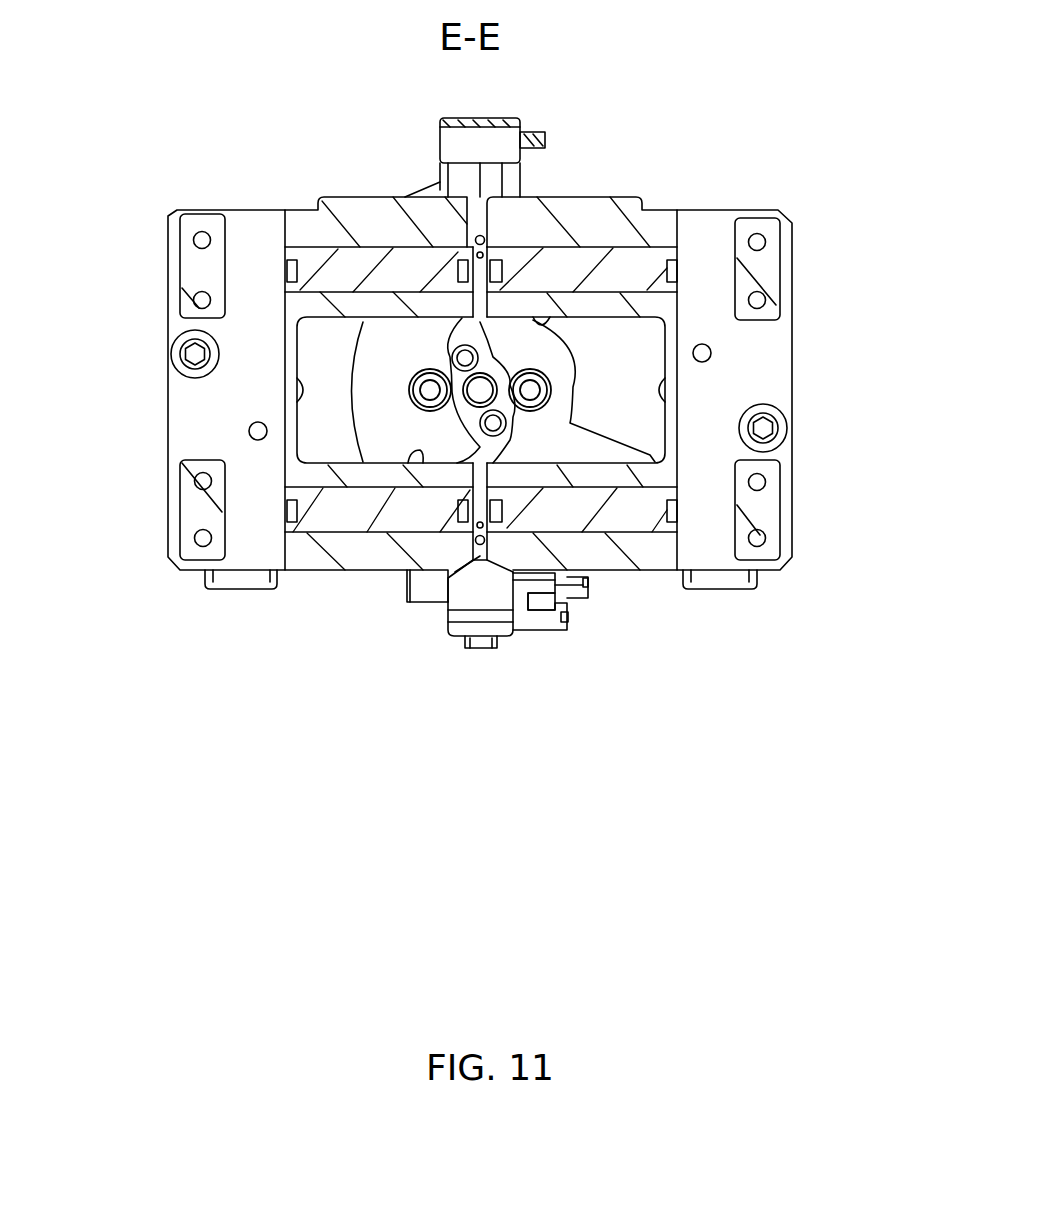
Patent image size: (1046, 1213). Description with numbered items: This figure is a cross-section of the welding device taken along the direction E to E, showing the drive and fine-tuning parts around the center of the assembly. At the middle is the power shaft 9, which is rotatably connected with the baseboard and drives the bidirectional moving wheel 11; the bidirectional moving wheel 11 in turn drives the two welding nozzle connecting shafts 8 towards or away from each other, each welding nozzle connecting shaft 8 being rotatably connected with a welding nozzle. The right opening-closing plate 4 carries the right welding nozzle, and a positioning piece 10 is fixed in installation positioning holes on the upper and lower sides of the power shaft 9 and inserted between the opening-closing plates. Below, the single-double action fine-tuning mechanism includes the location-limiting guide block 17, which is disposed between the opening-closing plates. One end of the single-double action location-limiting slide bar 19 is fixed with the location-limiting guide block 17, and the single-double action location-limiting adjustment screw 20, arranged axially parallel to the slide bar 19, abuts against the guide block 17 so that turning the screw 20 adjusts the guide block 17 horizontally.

The right opening-closing plate 4 is at (428, 353).
The welding nozzle connecting shaft 8 is at (264, 336).
The power shaft 9 is at (698, 322).
The positioning piece 10 is at (699, 337).
The bidirectional moving wheel 11 is at (289, 291).
The location-limiting guide block 17 is at (289, 524).
The single-double action location-limiting slide bar 19 is at (740, 534).
The single-double action location-limiting adjustment screw 20 is at (719, 593).